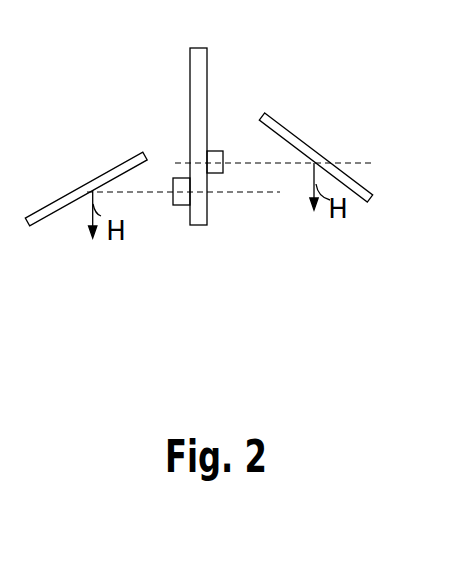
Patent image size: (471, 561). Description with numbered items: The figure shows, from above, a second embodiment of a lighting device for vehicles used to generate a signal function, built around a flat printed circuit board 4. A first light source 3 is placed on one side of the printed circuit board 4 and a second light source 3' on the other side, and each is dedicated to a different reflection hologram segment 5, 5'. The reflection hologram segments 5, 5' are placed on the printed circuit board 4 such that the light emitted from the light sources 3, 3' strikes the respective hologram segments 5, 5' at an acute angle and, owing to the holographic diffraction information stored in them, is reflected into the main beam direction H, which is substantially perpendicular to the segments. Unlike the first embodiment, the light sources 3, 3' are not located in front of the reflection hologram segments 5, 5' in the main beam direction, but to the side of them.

The first light source 3 is at (176, 223).
The second light source 3' is at (225, 209).
The printed circuit board 4 is at (200, 72).
The reflection hologram segment 5 is at (86, 187).
The second reflection hologram segment 5' is at (315, 153).